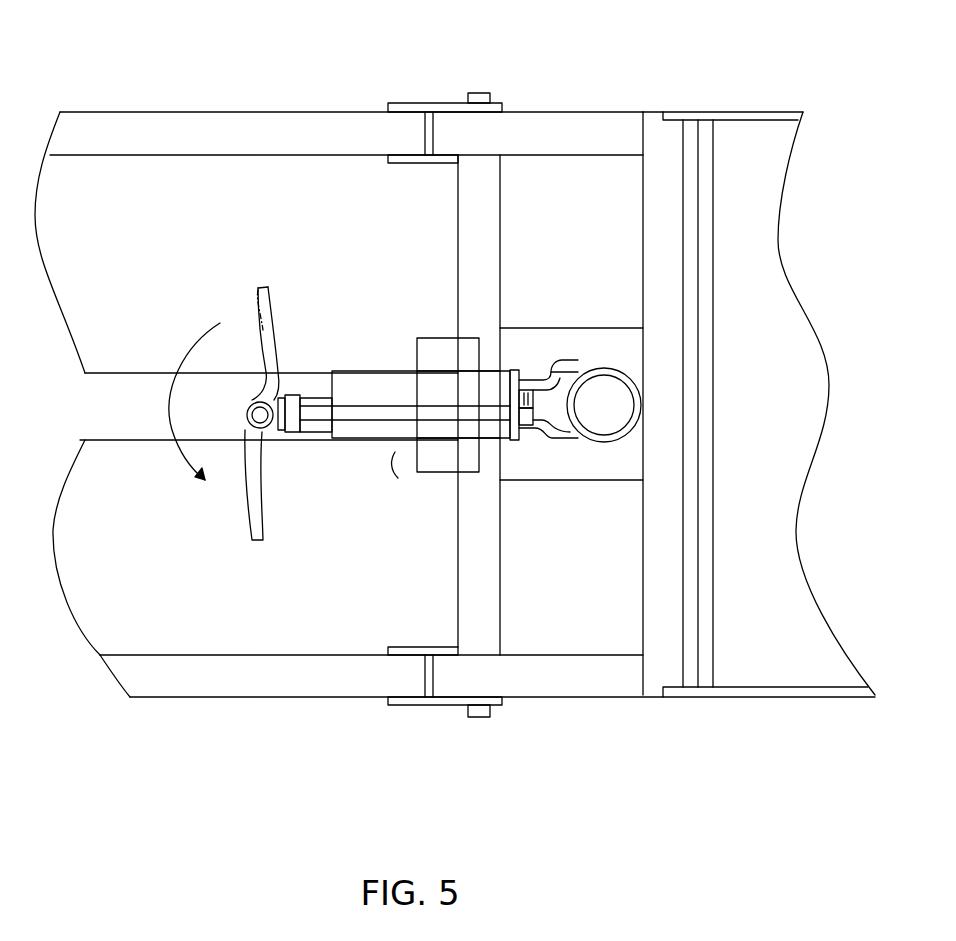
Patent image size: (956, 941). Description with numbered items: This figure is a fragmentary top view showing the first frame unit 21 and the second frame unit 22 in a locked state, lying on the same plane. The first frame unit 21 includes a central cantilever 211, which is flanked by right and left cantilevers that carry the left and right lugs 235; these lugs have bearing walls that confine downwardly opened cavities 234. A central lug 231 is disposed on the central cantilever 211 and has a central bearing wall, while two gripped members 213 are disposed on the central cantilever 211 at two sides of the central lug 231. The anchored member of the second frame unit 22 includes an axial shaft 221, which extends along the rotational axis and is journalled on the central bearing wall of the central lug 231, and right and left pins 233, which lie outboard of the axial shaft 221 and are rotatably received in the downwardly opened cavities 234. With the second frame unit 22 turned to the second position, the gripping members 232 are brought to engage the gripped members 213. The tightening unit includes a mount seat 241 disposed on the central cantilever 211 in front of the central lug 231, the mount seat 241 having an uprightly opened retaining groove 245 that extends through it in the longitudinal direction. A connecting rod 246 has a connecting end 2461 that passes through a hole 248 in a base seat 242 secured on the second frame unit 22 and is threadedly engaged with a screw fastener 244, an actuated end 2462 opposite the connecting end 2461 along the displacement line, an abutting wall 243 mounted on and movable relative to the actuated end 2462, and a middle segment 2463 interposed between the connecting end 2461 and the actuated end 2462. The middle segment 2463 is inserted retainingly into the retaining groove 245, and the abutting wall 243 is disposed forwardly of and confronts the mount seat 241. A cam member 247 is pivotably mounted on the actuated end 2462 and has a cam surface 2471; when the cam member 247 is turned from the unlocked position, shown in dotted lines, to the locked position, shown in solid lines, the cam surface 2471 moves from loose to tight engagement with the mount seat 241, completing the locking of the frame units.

The first frame unit 21 is at (200, 112).
The second frame unit 22 is at (574, 112).
The central cantilever 211 is at (135, 372).
The axial shaft 221 is at (500, 222).
The gripped members 213 is at (425, 338).
The central lug 231 is at (490, 430).
The gripping members 232 is at (417, 350).
The right and left pins 233 is at (483, 717).
The downwardly opened cavities 234 is at (470, 714).
The left and right lugs 235 is at (400, 706).
The mount seat 241 is at (327, 371).
The base seat 242 is at (574, 440).
The abutting wall 243 is at (267, 448).
The screw fastener 244 is at (552, 376).
The retaining groove 245 is at (315, 410).
The connecting rod 246 is at (347, 425).
The connecting end 2461 is at (575, 376).
The actuated end 2462 is at (297, 398).
The middle segment 2463 is at (396, 470).
The cam member 247 is at (247, 523).
The cam surface 2471 is at (280, 372).
The hole 248 is at (530, 430).